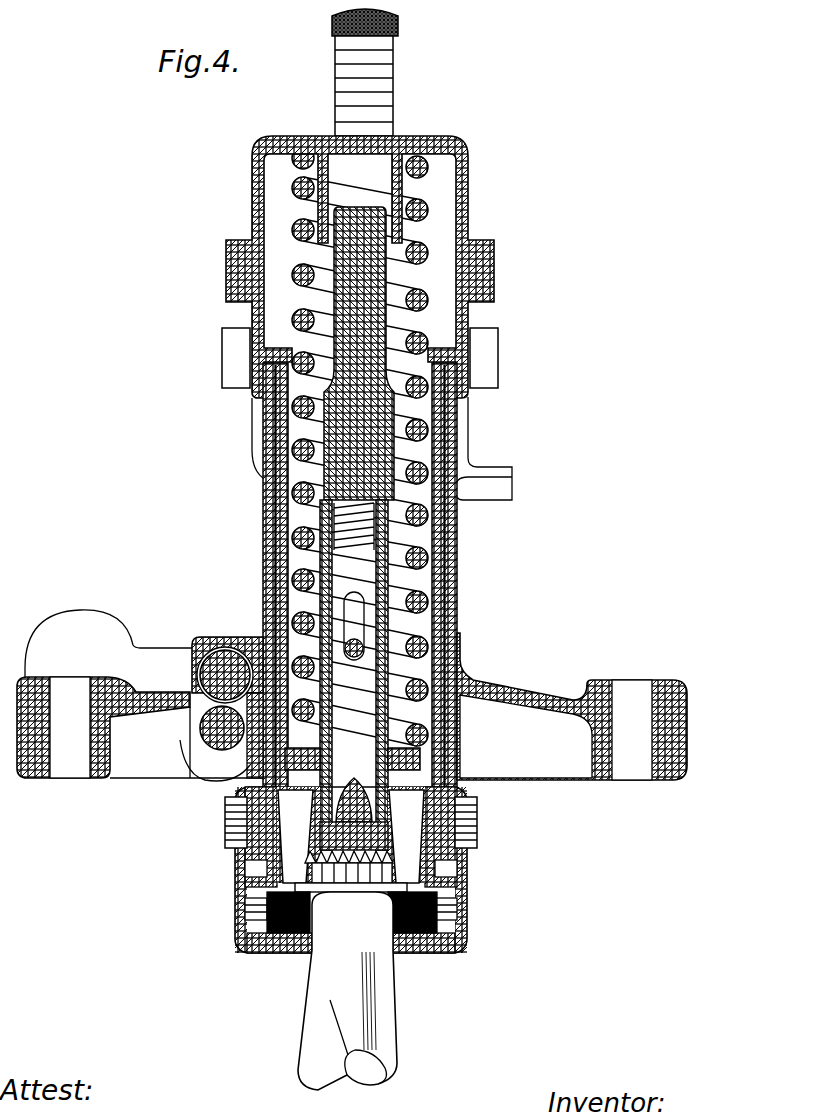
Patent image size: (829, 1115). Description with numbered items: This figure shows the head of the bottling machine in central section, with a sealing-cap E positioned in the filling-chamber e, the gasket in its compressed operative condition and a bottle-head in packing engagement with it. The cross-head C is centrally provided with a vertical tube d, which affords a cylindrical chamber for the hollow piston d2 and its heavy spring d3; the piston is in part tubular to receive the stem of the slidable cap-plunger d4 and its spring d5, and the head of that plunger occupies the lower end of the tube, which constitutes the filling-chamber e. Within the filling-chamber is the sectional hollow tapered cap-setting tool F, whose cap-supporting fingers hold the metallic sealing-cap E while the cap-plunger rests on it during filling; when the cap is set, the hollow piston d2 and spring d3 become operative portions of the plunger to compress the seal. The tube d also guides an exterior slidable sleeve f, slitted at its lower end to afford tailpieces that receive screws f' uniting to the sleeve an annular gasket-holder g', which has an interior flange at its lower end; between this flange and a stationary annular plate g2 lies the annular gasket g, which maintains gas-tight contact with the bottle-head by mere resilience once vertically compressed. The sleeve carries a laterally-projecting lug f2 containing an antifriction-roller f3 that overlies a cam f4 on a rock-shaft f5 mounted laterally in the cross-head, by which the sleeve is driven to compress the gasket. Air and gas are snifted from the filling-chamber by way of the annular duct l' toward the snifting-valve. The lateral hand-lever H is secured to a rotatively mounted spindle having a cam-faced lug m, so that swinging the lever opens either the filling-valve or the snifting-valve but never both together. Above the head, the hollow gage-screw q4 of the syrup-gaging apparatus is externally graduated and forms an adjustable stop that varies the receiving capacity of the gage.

The hollow gage-screw q4 is at (383, 90).
The valve housing B is at (360, 399).
The vertical tube d is at (472, 207).
The hollow piston d2 is at (360, 452).
The spring d3 is at (302, 318).
The cap-plunger d4 is at (352, 755).
The spring d5 is at (376, 528).
The lug I is at (349, 358).
The cam-faced lug m is at (487, 448).
The slidable sleeve f is at (344, 576).
The screws f' is at (346, 837).
The laterally-projecting lug f2 is at (227, 637).
The antifriction-roller f3 is at (200, 638).
The cam f4 is at (200, 733).
The rock-shaft f5 is at (220, 757).
The lateral hand-lever H is at (140, 694).
The cross-head C is at (572, 706).
The metallic sealing-cap E is at (308, 853).
The cap-setting tool F is at (403, 850).
The annular gasket g is at (341, 968).
The annular gasket-holder g' is at (369, 873).
The stationary annular plate g2 is at (433, 890).
The annular duct l' is at (347, 911).
The filling-chamber e is at (362, 875).
The shaft D is at (347, 991).